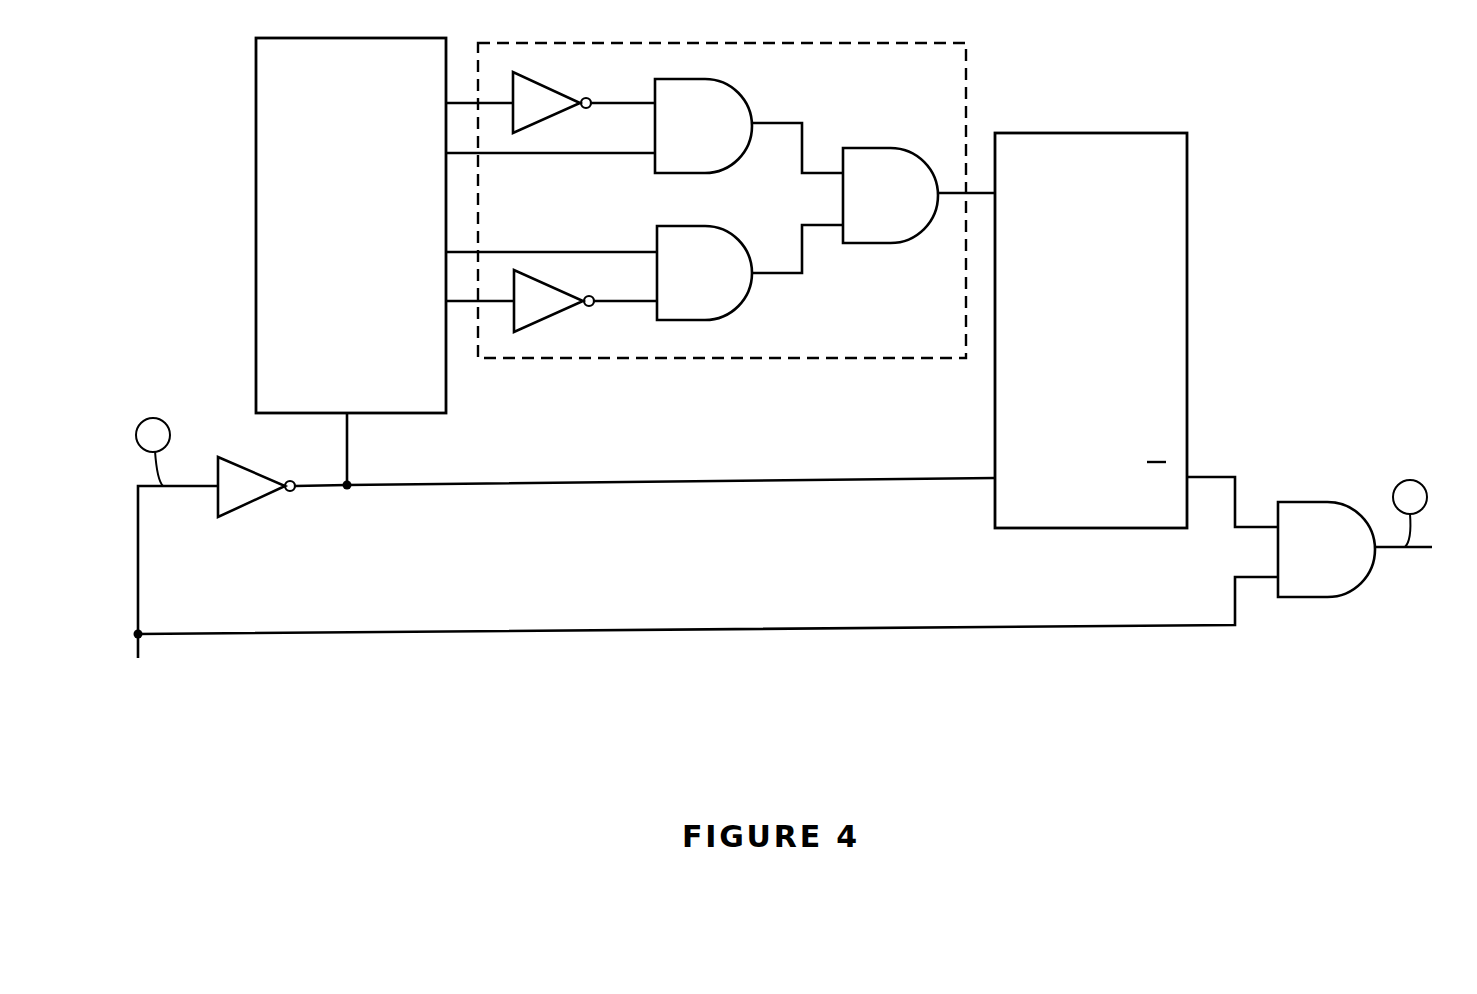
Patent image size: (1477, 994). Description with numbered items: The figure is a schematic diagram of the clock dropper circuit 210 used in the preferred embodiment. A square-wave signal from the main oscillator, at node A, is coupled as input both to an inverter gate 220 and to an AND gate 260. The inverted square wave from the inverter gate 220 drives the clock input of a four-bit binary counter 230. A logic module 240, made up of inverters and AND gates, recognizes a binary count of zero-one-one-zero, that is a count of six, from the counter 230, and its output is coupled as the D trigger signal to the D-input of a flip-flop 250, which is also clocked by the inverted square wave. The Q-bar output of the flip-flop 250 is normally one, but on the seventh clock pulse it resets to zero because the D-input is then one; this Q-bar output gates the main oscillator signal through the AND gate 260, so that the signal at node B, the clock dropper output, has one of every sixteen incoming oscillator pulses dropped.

The clock dropper circuit 210 is at (1243, 118).
The inverter gate 220 is at (238, 508).
The four-bit binary counter 230 is at (265, 250).
The logic module 240 is at (667, 358).
The flip-flop 250 is at (995, 379).
The AND gate 260 is at (1297, 507).